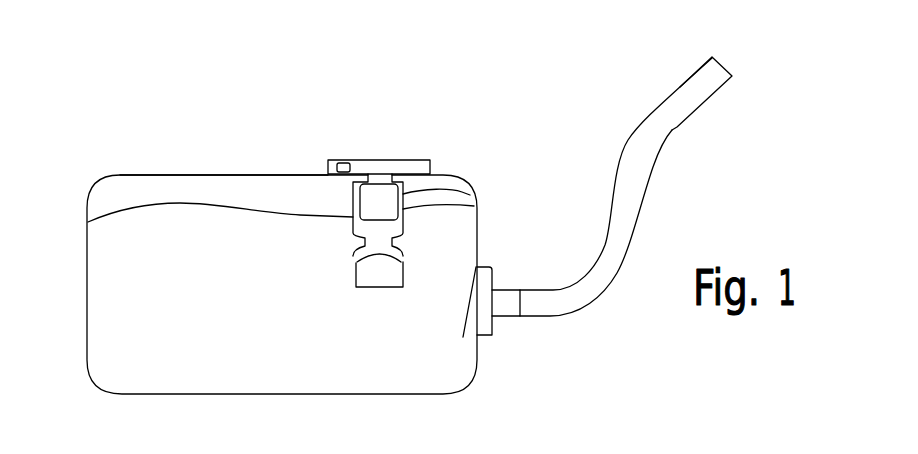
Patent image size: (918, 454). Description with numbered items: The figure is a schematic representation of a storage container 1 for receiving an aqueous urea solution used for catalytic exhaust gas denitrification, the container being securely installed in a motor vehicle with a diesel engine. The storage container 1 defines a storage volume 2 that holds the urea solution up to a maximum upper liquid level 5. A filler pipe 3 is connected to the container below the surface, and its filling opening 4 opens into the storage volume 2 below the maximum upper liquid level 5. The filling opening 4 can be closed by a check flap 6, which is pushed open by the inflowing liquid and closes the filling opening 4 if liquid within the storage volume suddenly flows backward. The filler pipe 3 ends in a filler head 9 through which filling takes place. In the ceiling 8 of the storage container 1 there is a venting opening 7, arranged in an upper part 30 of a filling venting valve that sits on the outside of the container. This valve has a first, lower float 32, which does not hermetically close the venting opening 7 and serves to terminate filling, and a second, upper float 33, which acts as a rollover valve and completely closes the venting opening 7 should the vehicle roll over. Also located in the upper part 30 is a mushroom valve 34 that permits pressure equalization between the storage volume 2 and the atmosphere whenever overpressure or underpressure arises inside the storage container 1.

The storage container 1 is at (194, 160).
The storage volume 2 is at (243, 330).
The filler pipe 3 is at (643, 162).
The filling opening 4 is at (490, 318).
The maximum upper liquid level 5 is at (268, 215).
The check flap 6 is at (490, 318).
The venting opening 7 is at (384, 200).
The ceiling 8 is at (240, 174).
The filler head 9 is at (722, 62).
The upper part of filling venting valve 30 is at (377, 160).
The first, lower float 32 is at (372, 283).
The second, upper float 33 is at (470, 195).
The mushroom valve 34 is at (345, 160).